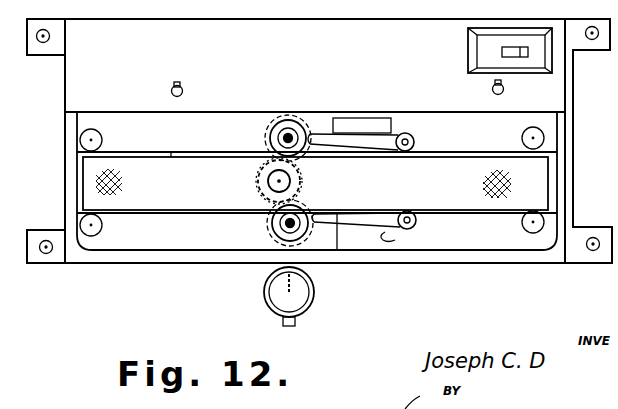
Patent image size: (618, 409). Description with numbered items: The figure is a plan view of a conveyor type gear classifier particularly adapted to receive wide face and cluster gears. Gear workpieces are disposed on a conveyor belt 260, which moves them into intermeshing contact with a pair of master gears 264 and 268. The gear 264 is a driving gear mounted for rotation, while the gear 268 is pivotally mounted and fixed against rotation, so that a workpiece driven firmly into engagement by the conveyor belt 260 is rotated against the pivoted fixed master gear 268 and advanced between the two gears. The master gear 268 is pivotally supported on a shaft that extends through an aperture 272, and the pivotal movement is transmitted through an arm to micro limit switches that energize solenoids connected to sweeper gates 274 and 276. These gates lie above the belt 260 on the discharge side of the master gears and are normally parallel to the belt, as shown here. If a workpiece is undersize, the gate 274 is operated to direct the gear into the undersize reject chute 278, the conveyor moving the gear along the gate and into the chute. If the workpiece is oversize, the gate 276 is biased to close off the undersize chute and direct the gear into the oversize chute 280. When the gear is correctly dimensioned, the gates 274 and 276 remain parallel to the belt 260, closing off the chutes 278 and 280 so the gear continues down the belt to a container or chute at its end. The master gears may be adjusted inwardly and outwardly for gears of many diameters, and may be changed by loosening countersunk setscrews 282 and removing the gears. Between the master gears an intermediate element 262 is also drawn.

The conveyor belt 260 is at (173, 192).
The idler gear 262 is at (257, 180).
The driving master gear 264 is at (292, 118).
The pivoted master gear 268 is at (268, 241).
The aperture 272 is at (268, 222).
The sweeper gate 274 is at (413, 135).
The sweeper gate 276 is at (385, 210).
The undersize reject chute 278 is at (377, 122).
The oversize chute 280 is at (395, 240).
The countersunk setscrews 282 is at (286, 135).